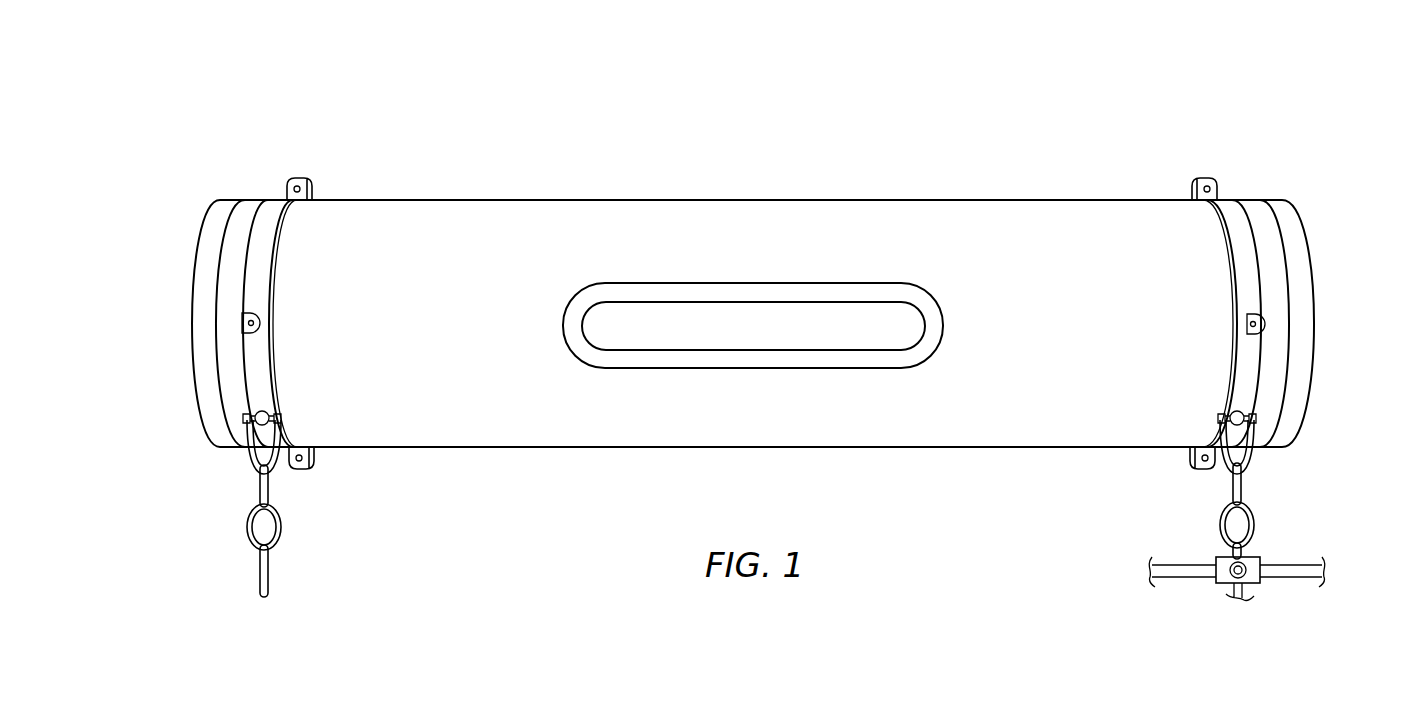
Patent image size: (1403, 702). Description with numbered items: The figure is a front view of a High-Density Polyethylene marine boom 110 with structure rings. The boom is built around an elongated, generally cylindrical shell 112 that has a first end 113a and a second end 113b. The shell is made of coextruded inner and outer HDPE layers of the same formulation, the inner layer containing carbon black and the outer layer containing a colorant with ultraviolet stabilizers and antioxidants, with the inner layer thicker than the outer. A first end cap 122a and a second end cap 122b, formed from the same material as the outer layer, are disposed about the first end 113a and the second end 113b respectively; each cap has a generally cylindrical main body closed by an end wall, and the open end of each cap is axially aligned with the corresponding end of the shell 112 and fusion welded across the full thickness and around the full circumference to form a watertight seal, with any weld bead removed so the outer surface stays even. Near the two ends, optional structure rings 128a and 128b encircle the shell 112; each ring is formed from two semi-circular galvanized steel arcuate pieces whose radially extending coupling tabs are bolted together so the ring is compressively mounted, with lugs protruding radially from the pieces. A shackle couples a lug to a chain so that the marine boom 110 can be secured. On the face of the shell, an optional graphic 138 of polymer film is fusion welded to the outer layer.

The marine boom 110 is at (786, 106).
The shell 112 is at (952, 228).
The first end 113a is at (241, 164).
The second end 113b is at (1262, 164).
The first end cap 122a is at (202, 272).
The second end cap 122b is at (1300, 272).
The first structure ring 128a is at (263, 238).
The second structure ring 128b is at (1238, 238).
The graphic 138 is at (680, 320).